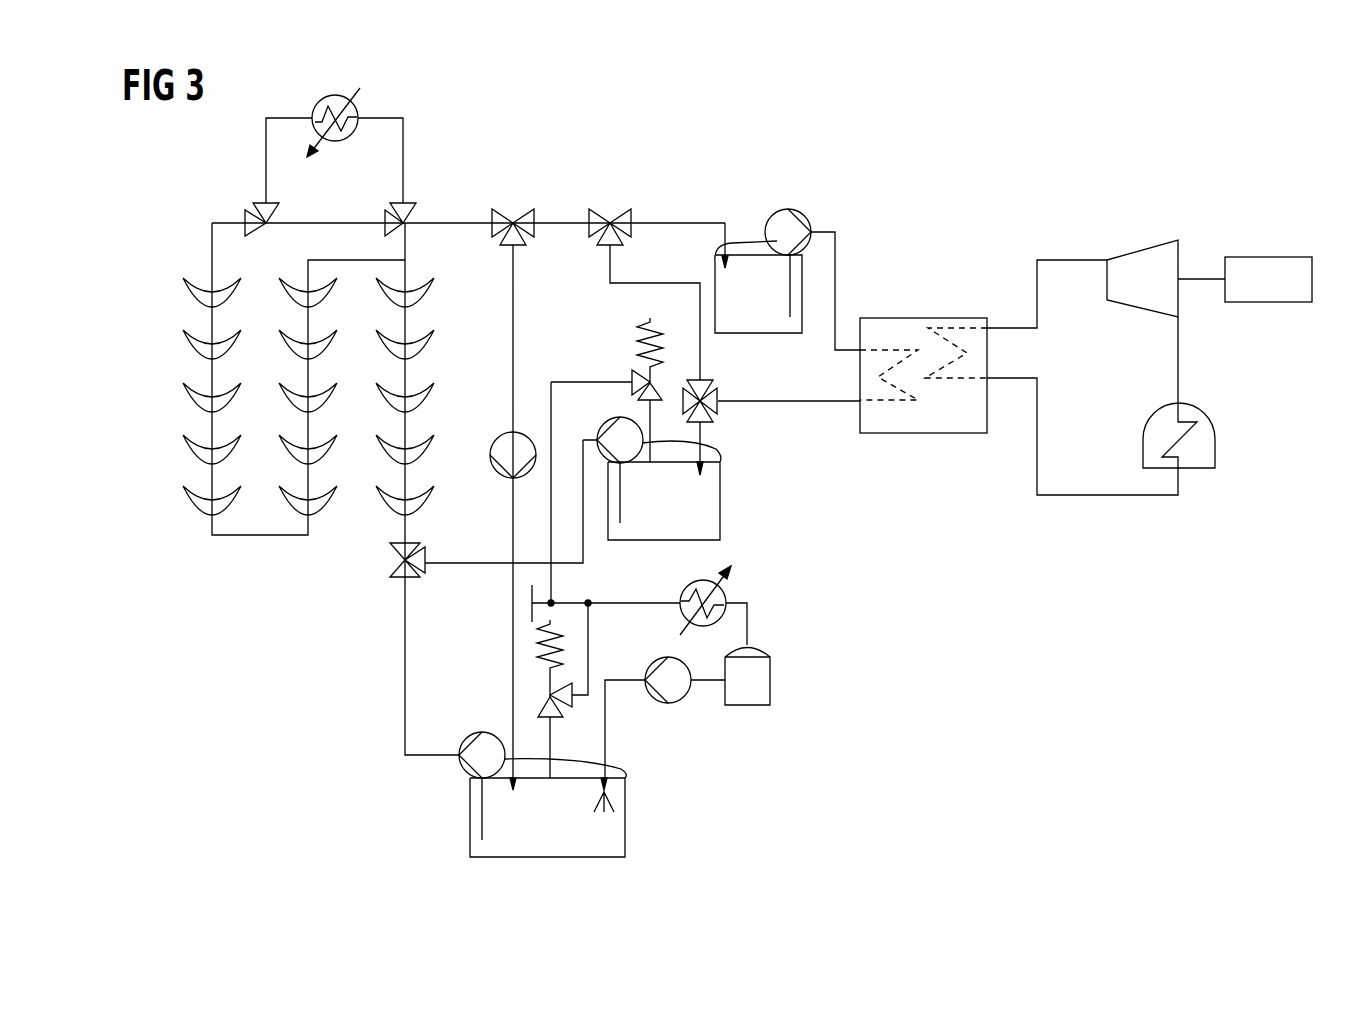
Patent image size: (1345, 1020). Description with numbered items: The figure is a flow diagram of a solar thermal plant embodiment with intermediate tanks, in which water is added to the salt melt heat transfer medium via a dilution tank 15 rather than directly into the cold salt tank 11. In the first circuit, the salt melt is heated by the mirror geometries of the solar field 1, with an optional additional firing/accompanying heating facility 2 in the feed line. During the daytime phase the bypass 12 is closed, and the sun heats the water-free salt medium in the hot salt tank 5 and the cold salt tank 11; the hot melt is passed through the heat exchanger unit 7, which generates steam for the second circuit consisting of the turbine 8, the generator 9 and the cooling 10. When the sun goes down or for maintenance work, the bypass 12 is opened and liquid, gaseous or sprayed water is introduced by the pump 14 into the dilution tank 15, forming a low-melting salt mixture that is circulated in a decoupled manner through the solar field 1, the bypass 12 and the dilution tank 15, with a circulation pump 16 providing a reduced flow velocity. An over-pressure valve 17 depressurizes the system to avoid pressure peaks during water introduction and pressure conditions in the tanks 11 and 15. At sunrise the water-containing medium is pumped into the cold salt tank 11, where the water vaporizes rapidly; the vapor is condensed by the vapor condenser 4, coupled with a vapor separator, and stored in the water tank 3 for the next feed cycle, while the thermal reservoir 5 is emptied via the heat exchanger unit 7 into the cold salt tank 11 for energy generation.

The solar field 1 is at (268, 364).
The additional firing/accompanying heating facility 2 is at (313, 107).
The water tank 3 is at (770, 681).
The vapor condenser 4 is at (684, 587).
The first tank 5 is at (764, 334).
The heat exchanger unit 7 is at (902, 318).
The turbine 8 is at (1140, 245).
The generator 9 is at (1268, 257).
The cooling 10 is at (1215, 449).
The cold salt tank 11 is at (720, 510).
The bypass 12 is at (513, 277).
The pump 14 is at (671, 704).
The dilution tank 15 is at (625, 836).
The circulation pump 16 is at (496, 440).
The over-pressure valve 17 is at (633, 343).